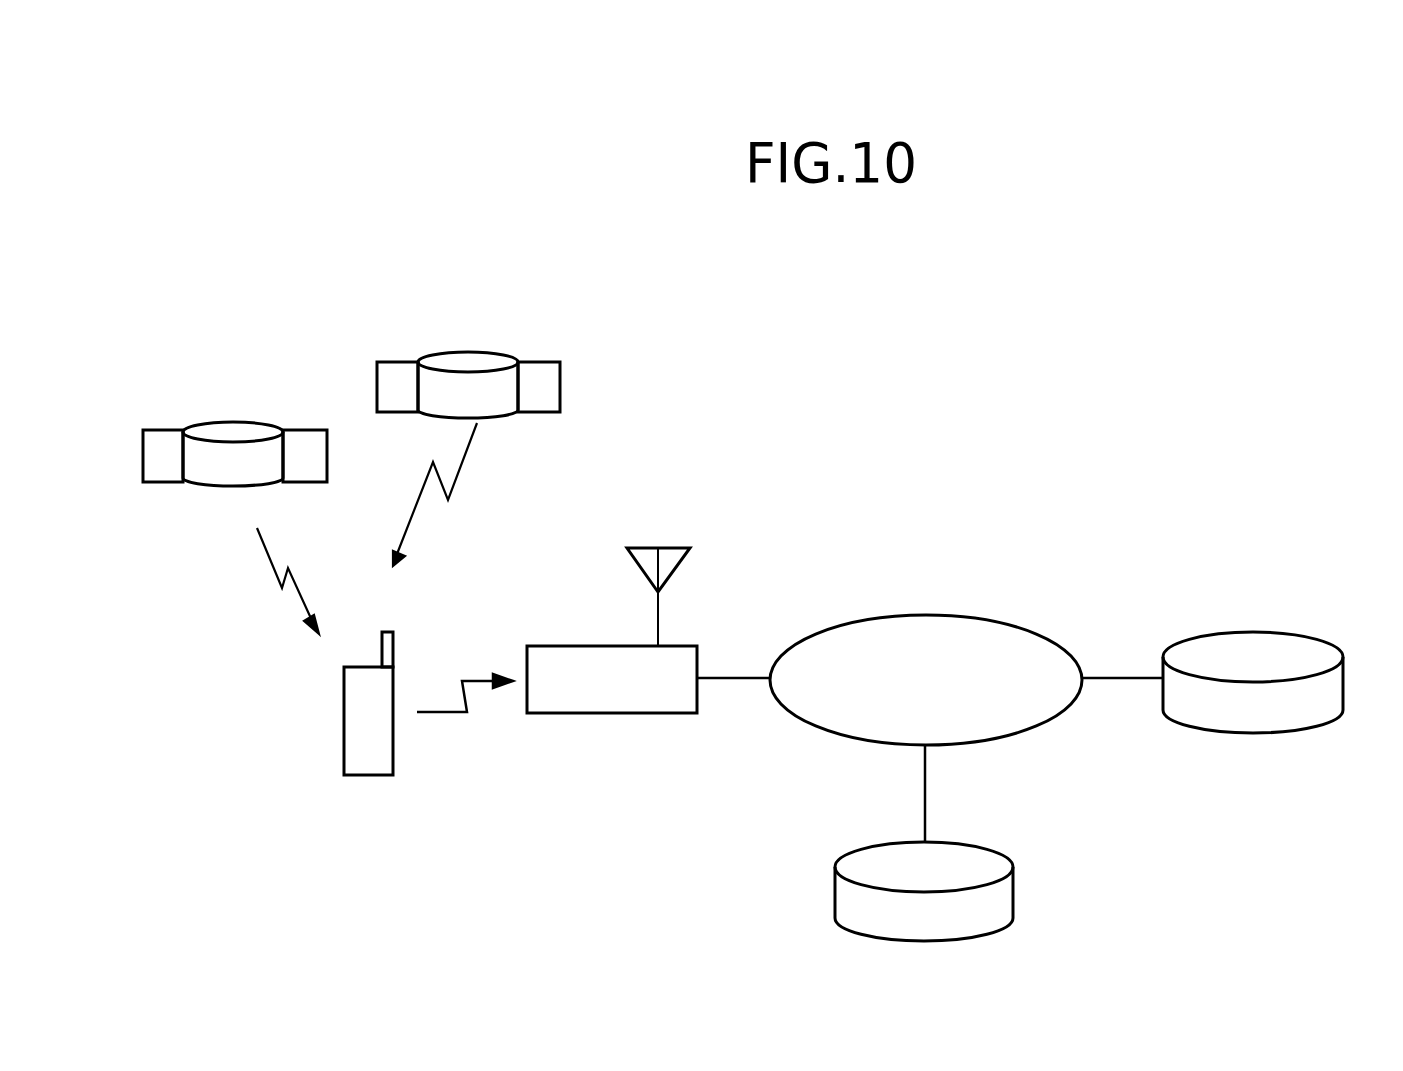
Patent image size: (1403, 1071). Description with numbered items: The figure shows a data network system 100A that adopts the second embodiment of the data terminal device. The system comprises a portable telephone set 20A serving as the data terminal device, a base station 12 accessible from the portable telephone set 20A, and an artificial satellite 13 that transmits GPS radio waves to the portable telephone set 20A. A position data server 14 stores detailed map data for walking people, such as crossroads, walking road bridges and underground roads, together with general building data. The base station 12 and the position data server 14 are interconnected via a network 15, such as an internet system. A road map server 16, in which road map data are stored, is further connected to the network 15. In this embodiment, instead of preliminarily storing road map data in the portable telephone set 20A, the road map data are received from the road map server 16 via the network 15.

The data network system 100A is at (1242, 339).
The artificial satellite 13 is at (535, 361).
The portable telephone set 20A is at (394, 629).
The base station 12 is at (684, 645).
The network 15 is at (981, 617).
The position data server 14 is at (1300, 635).
The road map server 16 is at (968, 843).